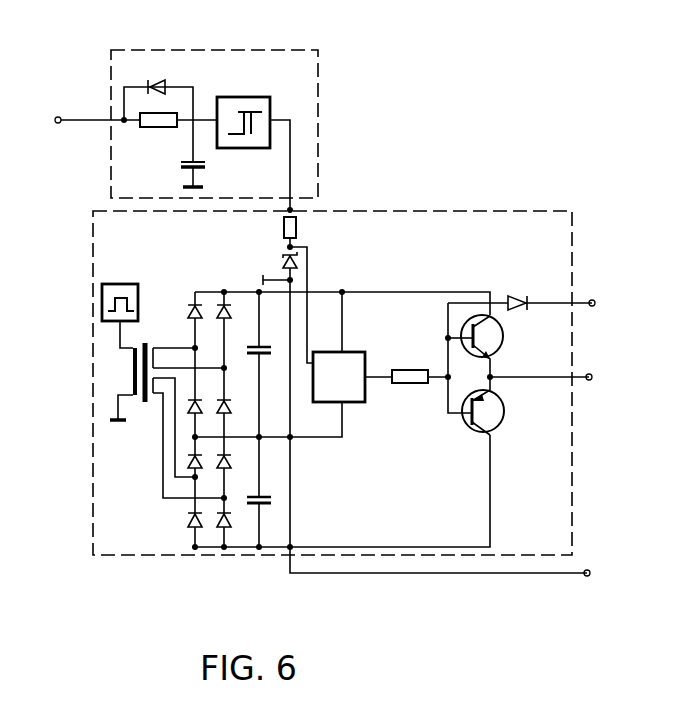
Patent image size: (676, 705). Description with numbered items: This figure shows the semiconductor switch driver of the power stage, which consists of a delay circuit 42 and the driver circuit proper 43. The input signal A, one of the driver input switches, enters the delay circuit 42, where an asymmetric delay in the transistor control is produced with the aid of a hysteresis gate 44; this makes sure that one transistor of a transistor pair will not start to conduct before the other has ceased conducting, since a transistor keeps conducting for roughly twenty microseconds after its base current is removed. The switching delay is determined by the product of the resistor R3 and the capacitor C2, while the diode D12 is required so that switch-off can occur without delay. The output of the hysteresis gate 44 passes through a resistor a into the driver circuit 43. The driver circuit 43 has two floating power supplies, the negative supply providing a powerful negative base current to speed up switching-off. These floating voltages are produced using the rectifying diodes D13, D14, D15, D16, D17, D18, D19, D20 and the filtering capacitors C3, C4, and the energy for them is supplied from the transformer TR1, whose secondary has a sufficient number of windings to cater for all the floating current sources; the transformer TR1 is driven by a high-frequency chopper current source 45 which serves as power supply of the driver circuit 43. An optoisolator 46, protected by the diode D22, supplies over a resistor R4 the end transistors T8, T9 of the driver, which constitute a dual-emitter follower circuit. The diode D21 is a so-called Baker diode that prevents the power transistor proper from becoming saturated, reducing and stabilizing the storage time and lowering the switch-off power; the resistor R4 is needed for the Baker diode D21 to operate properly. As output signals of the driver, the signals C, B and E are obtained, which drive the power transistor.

The delay circuit 42 is at (272, 50).
The driver circuit proper 43 is at (495, 211).
The hysteresis gate 44 is at (270, 98).
The high-frequency chopper current source 45 is at (126, 283).
The optoisolator 46 is at (366, 355).
The diode D12 is at (161, 75).
The resistor R3 is at (177, 128).
The capacitor C2 is at (205, 176).
The resistor a is at (291, 209).
The protective diode D22 is at (284, 263).
The transformer TR1 is at (120, 381).
The rectifying diode D13 is at (193, 312).
The rectifying diode D14 is at (232, 312).
The rectifying diode D15 is at (193, 412).
The rectifying diode D16 is at (230, 409).
The rectifying diode D17 is at (193, 470).
The rectifying diode D18 is at (232, 463).
The rectifying diode D19 is at (193, 527).
The rectifying diode D20 is at (228, 527).
The Baker diode D21 is at (538, 284).
The filtering capacitor C3 is at (273, 350).
The filtering capacitor C4 is at (265, 510).
The resistor R4 is at (420, 383).
The end transistor T8 is at (501, 352).
The end transistor T9 is at (476, 432).
The input signal A is at (47, 119).
The output signal B is at (598, 380).
The output signal C is at (600, 306).
The output signal E is at (594, 576).